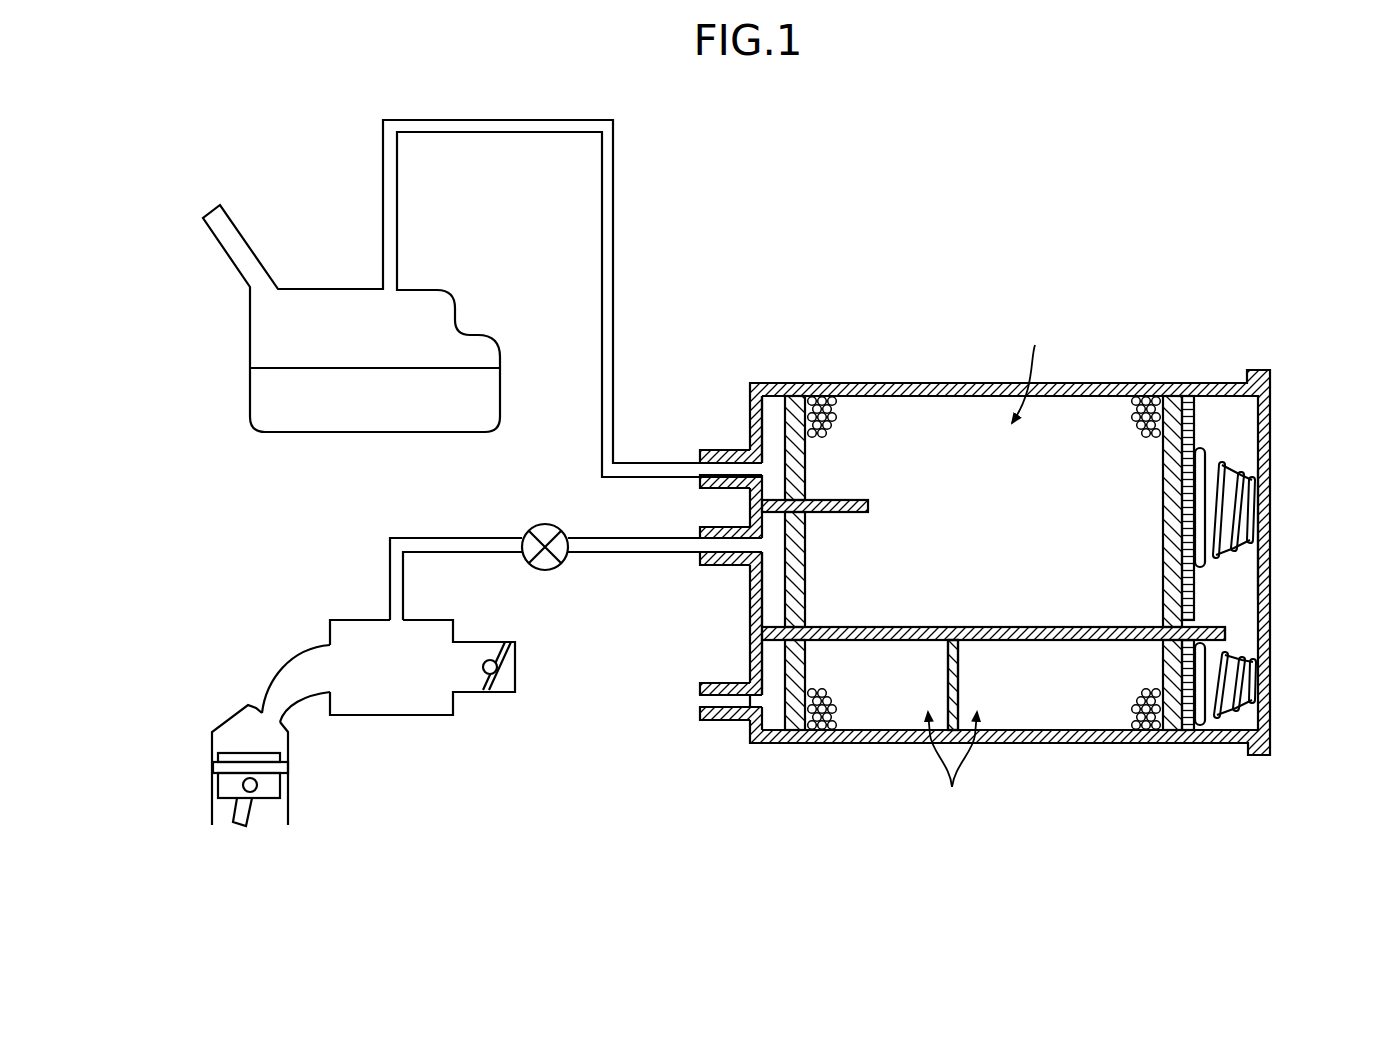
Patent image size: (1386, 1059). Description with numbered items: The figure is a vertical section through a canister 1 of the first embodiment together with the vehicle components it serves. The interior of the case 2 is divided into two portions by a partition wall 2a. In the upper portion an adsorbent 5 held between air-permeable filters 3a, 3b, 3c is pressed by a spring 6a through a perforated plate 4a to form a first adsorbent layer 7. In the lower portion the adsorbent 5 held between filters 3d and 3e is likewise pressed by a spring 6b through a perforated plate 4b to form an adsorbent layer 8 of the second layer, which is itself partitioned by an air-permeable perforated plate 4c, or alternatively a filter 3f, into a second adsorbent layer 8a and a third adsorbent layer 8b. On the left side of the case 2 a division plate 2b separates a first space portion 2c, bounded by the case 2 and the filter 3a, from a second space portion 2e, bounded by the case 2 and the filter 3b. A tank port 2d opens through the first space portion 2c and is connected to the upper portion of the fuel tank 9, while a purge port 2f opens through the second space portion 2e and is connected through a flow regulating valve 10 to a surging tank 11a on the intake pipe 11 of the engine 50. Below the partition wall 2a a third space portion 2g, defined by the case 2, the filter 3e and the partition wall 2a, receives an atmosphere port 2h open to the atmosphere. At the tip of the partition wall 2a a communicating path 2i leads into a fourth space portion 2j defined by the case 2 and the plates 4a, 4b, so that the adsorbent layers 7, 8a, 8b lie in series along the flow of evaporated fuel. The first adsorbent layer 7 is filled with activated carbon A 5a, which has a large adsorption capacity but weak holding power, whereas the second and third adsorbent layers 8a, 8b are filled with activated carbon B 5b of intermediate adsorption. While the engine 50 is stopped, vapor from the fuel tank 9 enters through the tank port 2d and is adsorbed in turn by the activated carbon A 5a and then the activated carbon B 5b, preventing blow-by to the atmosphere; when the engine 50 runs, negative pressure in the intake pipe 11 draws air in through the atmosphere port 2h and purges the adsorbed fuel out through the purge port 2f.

The canister 1 is at (936, 371).
The case 2 is at (877, 383).
The partition wall 2a is at (962, 627).
The division plate 2b is at (870, 505).
The first space portion 2c is at (772, 410).
The tank port 2d is at (720, 450).
The second space portion 2e is at (775, 588).
The purge port 2f is at (720, 527).
The third space portion 2g is at (772, 655).
The atmosphere port 2h is at (715, 722).
The communicating path 2i is at (1240, 632).
The fourth space portion 2j is at (1237, 582).
The filter 3a is at (806, 463).
The filter 3b is at (806, 583).
The filter 3c is at (1162, 575).
The filter 3d is at (1172, 722).
The filter 3e is at (778, 722).
The filter 3f is at (918, 765).
The perforated plate 4a is at (1196, 412).
The perforated plate 4b is at (1200, 670).
The perforated plate 4c is at (946, 698).
The adsorbent 5 is at (987, 570).
The activated carbon A 5a is at (1140, 423).
The activated carbon B 5b is at (835, 733).
The spring 6a is at (1225, 464).
The spring 6b is at (1237, 712).
The first adsorbent layer 7 is at (1075, 420).
The adsorbent layer of second layer 8 is at (1005, 752).
The second adsorbent layer 8a is at (1047, 712).
The third adsorbent layer 8b is at (885, 715).
The fuel tank 9 is at (318, 289).
The flow regulating valve 10 is at (543, 524).
The intake pipe 11 is at (275, 668).
The surging tank 11a is at (395, 715).
The engine 50 is at (212, 790).